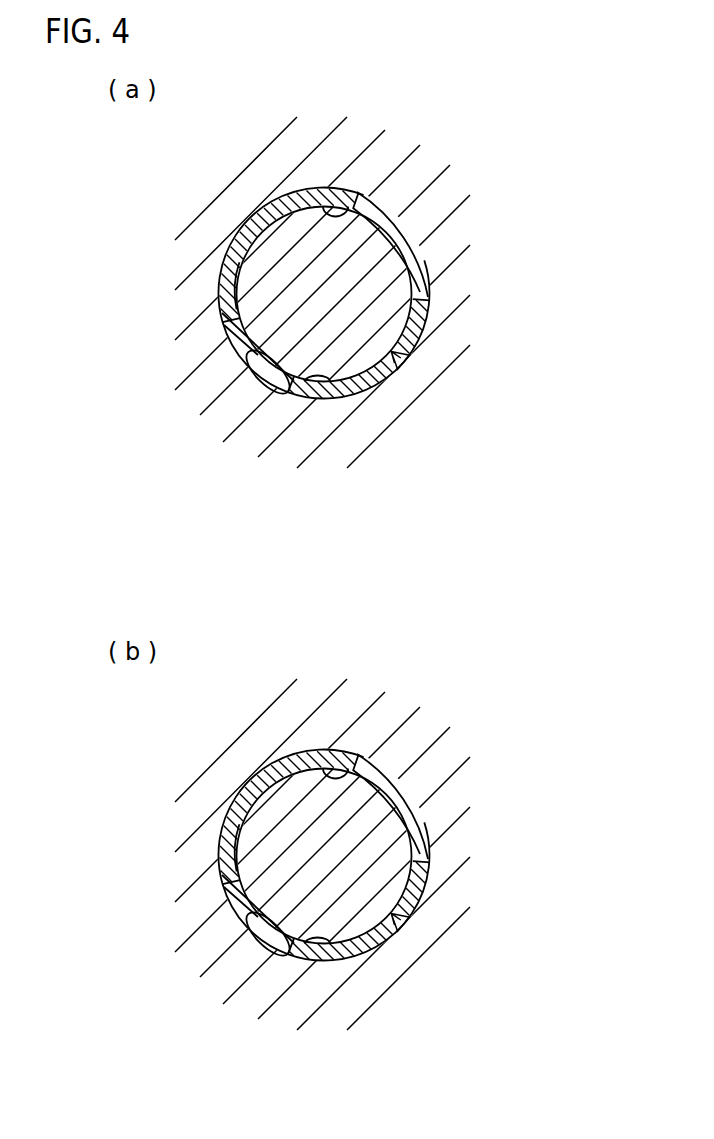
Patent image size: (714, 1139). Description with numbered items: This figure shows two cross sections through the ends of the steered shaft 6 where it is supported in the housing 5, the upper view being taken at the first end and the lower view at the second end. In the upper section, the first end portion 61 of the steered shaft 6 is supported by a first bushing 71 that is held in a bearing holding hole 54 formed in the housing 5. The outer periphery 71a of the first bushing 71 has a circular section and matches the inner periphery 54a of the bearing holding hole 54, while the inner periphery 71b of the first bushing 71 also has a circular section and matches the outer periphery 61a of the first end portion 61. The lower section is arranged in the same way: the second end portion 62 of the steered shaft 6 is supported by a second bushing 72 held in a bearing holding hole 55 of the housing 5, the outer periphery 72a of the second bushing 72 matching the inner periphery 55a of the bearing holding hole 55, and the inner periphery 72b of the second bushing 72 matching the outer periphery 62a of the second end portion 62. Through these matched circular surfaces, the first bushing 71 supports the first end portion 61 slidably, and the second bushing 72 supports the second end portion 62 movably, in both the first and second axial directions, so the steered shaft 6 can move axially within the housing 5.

The housing 5 is at (440, 303).
The steered shaft 6 is at (398, 364).
The bearing holding hole 54 is at (286, 394).
The inner periphery of bearing holding hole 54a is at (334, 392).
The bearing holding hole 55 is at (254, 970).
The inner periphery of bearing holding hole 55a is at (330, 1006).
The first end portion 61 is at (272, 316).
The outer periphery of first end portion 61a is at (382, 206).
The second end portion 62 is at (322, 847).
The outer periphery of second end portion 62a is at (428, 774).
The first bushing 71 is at (423, 255).
The outer periphery of first bushing 71a is at (227, 253).
The inner periphery of first bushing 71b is at (349, 207).
The second bushing 72 is at (375, 855).
The outer periphery of second bushing 72a is at (203, 790).
The inner periphery of second bushing 72b is at (363, 710).